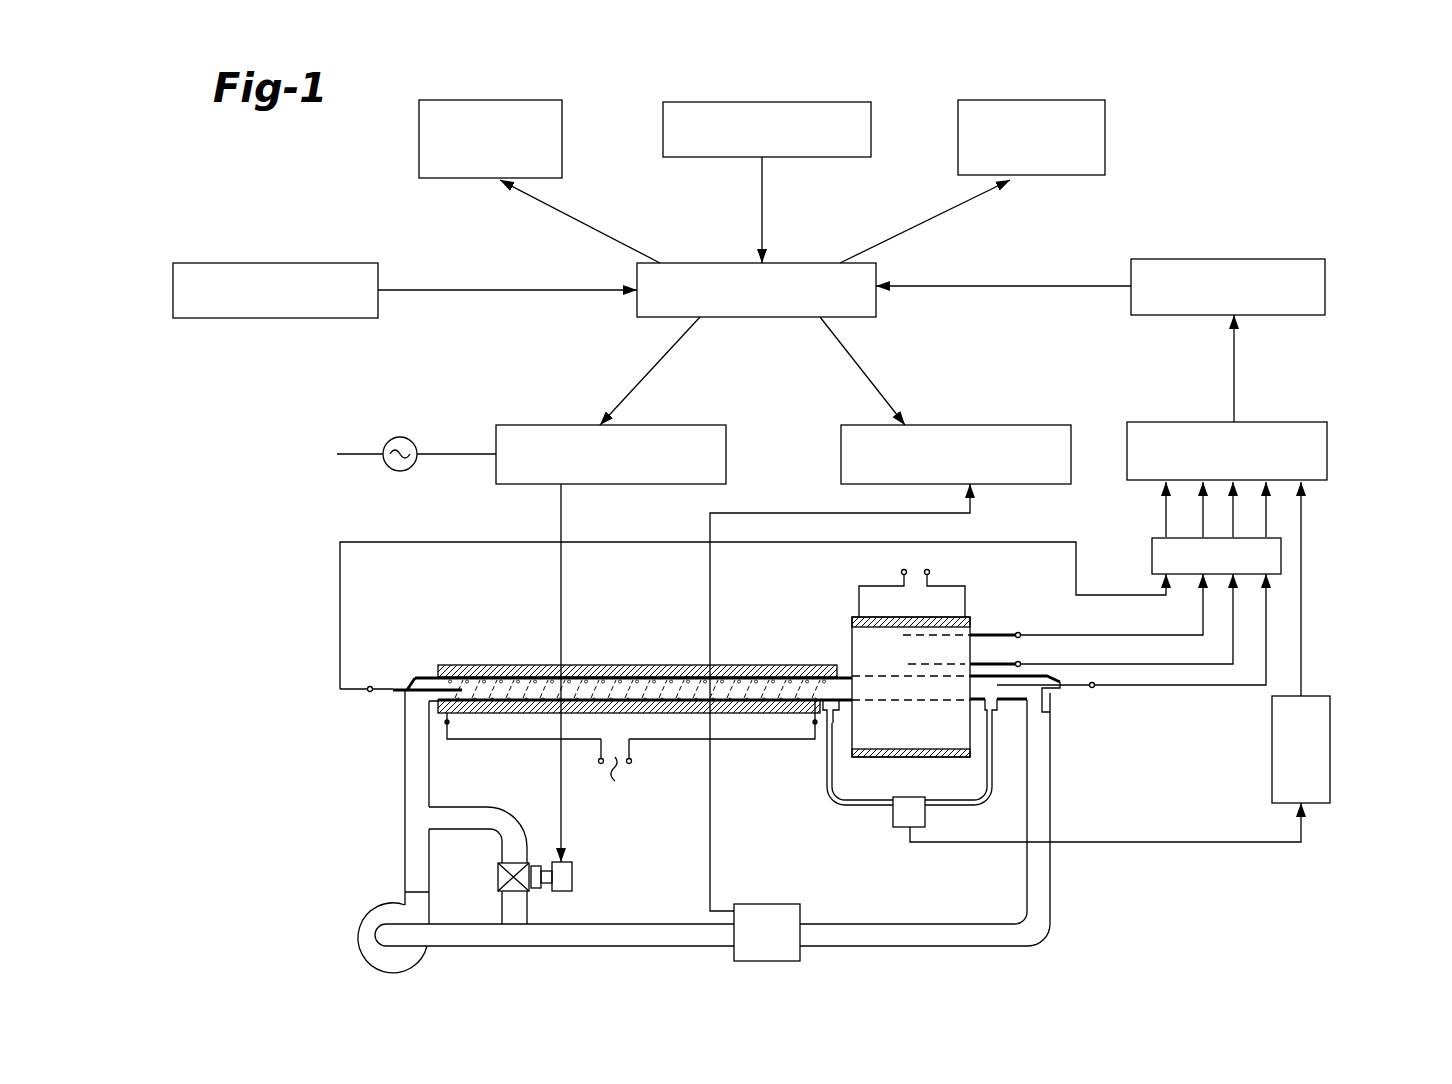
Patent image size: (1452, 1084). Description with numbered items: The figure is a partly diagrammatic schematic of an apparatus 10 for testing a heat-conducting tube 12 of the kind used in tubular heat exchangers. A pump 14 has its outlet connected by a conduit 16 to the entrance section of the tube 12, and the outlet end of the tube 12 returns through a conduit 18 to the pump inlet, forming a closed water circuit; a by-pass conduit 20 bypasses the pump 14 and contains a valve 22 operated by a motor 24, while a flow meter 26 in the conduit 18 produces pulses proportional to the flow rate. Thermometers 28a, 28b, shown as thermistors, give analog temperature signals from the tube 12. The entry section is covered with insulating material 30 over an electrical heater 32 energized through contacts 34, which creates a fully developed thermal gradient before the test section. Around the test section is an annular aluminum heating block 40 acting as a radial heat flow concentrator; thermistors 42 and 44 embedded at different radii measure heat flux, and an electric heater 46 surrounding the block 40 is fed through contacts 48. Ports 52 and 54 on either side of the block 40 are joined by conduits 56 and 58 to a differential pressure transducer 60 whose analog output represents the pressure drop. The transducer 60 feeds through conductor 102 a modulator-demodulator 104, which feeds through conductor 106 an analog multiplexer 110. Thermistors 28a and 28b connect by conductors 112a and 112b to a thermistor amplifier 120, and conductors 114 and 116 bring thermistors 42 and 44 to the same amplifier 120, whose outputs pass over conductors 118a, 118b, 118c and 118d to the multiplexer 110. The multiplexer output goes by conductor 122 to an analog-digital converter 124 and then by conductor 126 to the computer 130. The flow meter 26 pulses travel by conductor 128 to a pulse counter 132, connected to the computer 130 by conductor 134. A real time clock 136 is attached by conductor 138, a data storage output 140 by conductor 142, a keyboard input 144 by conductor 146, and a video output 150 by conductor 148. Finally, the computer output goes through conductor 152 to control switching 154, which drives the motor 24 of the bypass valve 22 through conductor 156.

The apparatus 10 is at (445, 373).
The tube 12 is at (530, 710).
The pump 14 is at (382, 910).
The conduit 16 is at (405, 747).
The conduit 18 is at (718, 819).
The by-pass conduit 20 is at (500, 805).
The valve 22 is at (525, 889).
The motor 24 is at (572, 875).
The flow meter 26 is at (800, 908).
The thermometer 28a is at (368, 692).
The thermometer 28b is at (1052, 712).
The insulating material 30 is at (602, 665).
The electrical heater 32 is at (648, 685).
The contacts 34 is at (615, 772).
The heating block 40 is at (880, 640).
The thermistor 42 is at (980, 661).
The thermistor 44 is at (983, 632).
The electric heater 46 is at (897, 757).
The contacts 48 is at (912, 566).
The port 52 is at (829, 730).
The port 54 is at (996, 713).
The conduit 56 is at (826, 787).
The conduit 58 is at (995, 787).
The differential pressure transducer 60 is at (893, 818).
The conductor 102 is at (1220, 842).
The modulator-demodulator 104 is at (1330, 715).
The conductor 106 is at (1301, 590).
The analog multiplexer 110 is at (1327, 452).
The conductor 112a is at (468, 542).
The conductor 112b is at (1266, 672).
The conductor 114 is at (1233, 643).
The conductor 116 is at (1203, 614).
The conductor 118a is at (1166, 502).
The conductor 118b is at (1203, 520).
The conductor 118c is at (1233, 508).
The conductor 118d is at (1266, 527).
The thermistor amplifier 120 is at (1152, 552).
The conductor 122 is at (1234, 366).
The analog-digital converter 124 is at (1248, 259).
The conductor 126 is at (1080, 290).
The conductor 128 is at (805, 513).
The computer 130 is at (876, 272).
The pulse counter 132 is at (841, 436).
The conductor 134 is at (870, 354).
The real time clock 136 is at (368, 318).
The conductor 138 is at (537, 295).
The data storage output 140 is at (562, 148).
The conductor 142 is at (612, 232).
The keyboard input 144 is at (871, 137).
The conductor 146 is at (762, 208).
The conductor 148 is at (948, 210).
The video output 150 is at (1105, 137).
The conductor 152 is at (645, 356).
The control switching 154 is at (688, 425).
The conductor 156 is at (561, 512).